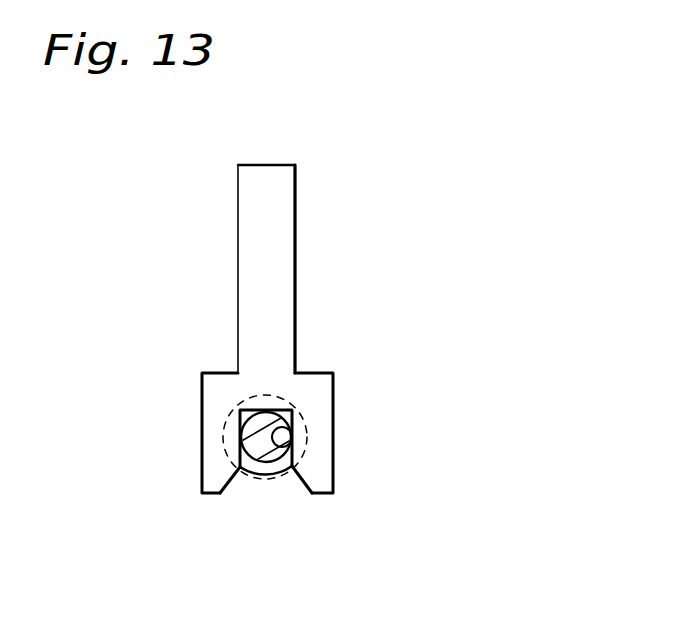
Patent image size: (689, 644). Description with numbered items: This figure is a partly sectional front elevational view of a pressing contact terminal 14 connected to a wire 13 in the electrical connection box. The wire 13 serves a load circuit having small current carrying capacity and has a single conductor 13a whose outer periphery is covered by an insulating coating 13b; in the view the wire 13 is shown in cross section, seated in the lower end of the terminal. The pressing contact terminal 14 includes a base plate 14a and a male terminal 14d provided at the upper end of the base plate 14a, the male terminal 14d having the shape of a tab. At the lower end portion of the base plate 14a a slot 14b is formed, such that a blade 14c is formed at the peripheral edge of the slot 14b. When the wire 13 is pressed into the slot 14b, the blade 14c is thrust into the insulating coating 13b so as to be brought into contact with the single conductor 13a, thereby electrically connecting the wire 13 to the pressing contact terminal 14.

The wire 13 is at (243, 478).
The single conductor 13a is at (240, 445).
The insulating coating 13b is at (288, 474).
The pressing contact terminal 14 is at (298, 247).
The base plate 14a is at (308, 388).
The slot 14b is at (263, 478).
The blade 14c is at (228, 446).
The male terminal 14d is at (277, 197).